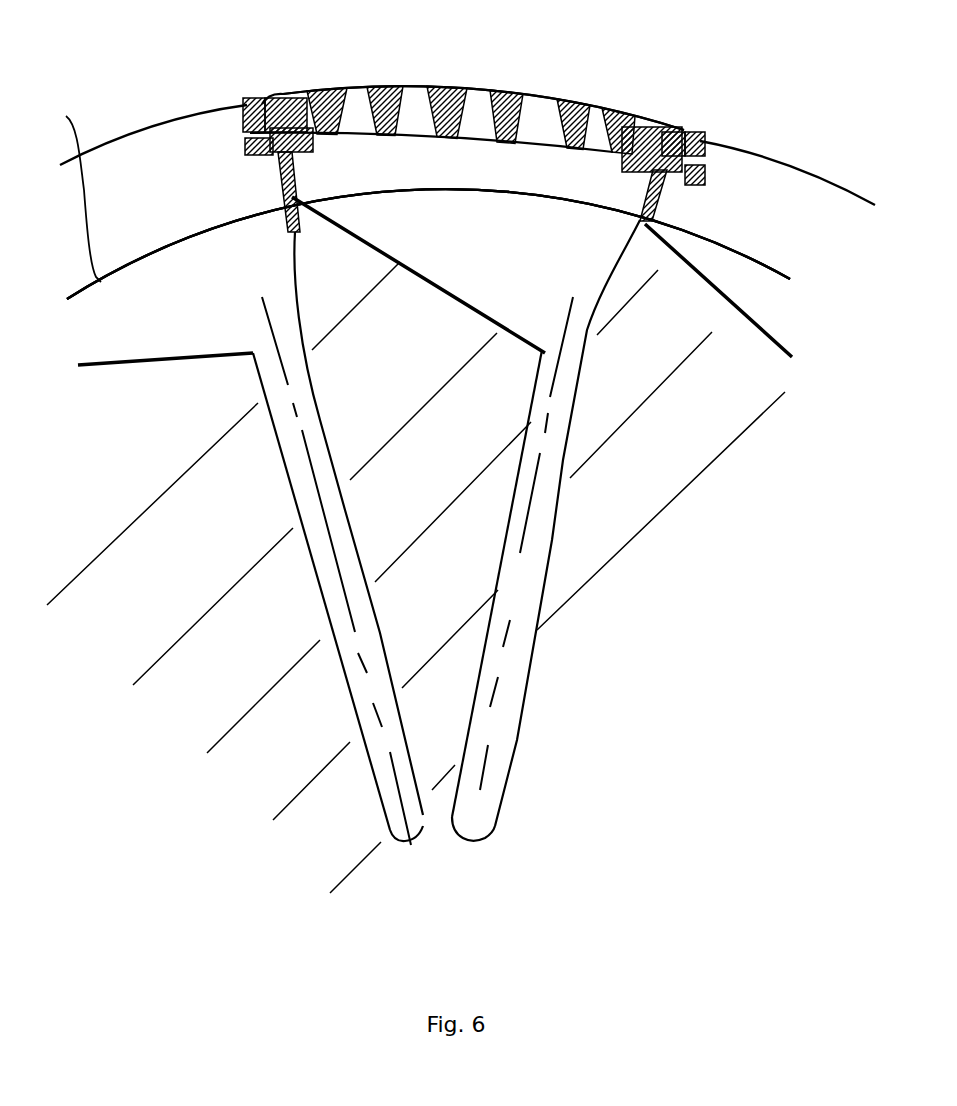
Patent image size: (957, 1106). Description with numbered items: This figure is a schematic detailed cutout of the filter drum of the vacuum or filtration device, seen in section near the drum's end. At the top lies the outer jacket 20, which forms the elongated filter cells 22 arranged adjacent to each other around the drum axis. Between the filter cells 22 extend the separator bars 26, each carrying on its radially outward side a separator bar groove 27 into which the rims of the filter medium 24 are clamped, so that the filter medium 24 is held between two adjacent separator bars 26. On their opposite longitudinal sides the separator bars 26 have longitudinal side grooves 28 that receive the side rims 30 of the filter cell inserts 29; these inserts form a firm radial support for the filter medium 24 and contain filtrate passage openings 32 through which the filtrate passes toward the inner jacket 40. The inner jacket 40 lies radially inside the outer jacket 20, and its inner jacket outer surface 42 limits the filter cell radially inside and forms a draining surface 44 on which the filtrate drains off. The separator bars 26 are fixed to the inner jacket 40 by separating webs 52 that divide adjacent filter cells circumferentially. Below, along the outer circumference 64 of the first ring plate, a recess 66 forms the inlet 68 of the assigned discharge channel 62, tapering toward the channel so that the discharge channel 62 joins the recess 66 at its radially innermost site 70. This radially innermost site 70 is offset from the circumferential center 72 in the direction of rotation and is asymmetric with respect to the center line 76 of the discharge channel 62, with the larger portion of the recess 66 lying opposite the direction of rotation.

The outer jacket 20 is at (767, 158).
The filter cell 22 is at (473, 147).
The filter medium 24 is at (597, 103).
The separator bar 26 is at (261, 111).
The separator bar groove 27 is at (266, 112).
The longitudinal side groove 28 is at (258, 138).
The filter cell insert 29 is at (417, 113).
The side rim 30 is at (316, 140).
The filtrate passage opening 32 is at (543, 123).
The inner jacket 40 is at (789, 278).
The inner jacket outer surface 42 is at (763, 261).
The draining surface 44 is at (397, 192).
The separating web 52 is at (278, 167).
The discharge channel 62 is at (489, 812).
The outer circumference 64 is at (78, 187).
The recess 66 is at (131, 315).
The inlet 68 is at (273, 345).
The radially innermost site 70 is at (254, 357).
The circumferential center 72 is at (483, 97).
The center line 76 is at (523, 588).